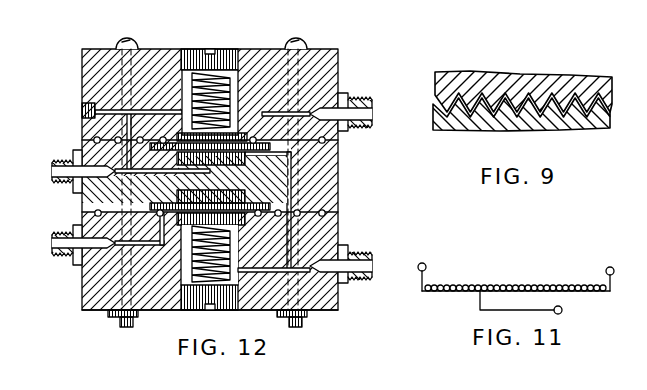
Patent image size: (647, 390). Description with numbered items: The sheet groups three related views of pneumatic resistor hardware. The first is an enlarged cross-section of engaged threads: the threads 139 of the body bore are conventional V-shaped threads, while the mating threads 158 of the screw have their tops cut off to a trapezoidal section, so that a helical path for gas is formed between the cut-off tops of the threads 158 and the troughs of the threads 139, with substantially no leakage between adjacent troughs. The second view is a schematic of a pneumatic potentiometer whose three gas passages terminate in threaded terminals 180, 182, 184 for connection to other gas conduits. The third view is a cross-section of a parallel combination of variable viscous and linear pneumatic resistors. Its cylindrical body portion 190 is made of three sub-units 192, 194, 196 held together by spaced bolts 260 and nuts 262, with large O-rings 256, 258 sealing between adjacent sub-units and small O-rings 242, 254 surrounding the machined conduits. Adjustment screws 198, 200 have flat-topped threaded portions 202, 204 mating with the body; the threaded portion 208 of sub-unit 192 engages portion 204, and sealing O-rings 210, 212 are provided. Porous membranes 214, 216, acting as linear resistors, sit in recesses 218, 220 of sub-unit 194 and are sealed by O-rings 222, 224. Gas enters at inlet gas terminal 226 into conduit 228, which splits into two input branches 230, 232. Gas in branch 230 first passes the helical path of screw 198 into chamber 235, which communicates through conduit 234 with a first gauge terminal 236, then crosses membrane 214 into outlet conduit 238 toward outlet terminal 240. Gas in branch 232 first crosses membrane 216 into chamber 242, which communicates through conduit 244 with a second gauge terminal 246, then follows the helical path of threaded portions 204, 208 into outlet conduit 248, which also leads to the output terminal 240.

In FIG. 9, the threads 139 is at (587, 90).
In FIG. 9, the threads 158 is at (598, 128).
In FIG. 11, the threaded terminal 180 is at (427, 266).
In FIG. 11, the threaded terminal 182 is at (563, 310).
In FIG. 11, the threaded terminal 184 is at (606, 270).
In FIG. 12, the cylindrical body portion 190 is at (339, 305).
In FIG. 12, the body sub-unit 192 is at (338, 291).
In FIG. 12, the body sub-unit 194 is at (338, 166).
In FIG. 12, the body sub-unit 196 is at (266, 58).
In FIG. 12, the adjustment screw 198 is at (190, 47).
In FIG. 12, the adjustment screw 200 is at (187, 305).
In FIG. 12, the flat-topped threaded portion 202 is at (226, 83).
In FIG. 12, the flat-topped threaded portion 204 is at (232, 277).
In FIG. 12, the threaded portion 208 is at (187, 243).
In FIG. 12, the sealing O-ring 210 is at (245, 50).
In FIG. 12, the sealing O-ring 212 is at (256, 300).
In FIG. 12, the porous membrane 214 is at (178, 142).
In FIG. 12, the porous membrane 216 is at (222, 195).
In FIG. 12, the recess 218 is at (130, 158).
In FIG. 12, the recess 220 is at (160, 215).
In FIG. 12, the O-ring 222 is at (262, 143).
In FIG. 12, the O-ring 224 is at (262, 217).
In FIG. 12, the inlet gas terminal 226 is at (115, 186).
In FIG. 12, the conduit 228 is at (82, 190).
In FIG. 12, the input conduit branch 230 is at (165, 103).
In FIG. 12, the input conduit branch 232 is at (187, 180).
In FIG. 12, the conduit 234 is at (289, 94).
In FIG. 12, the chamber 235 is at (232, 128).
In FIG. 12, the first gauge terminal 236 is at (360, 106).
In FIG. 12, the outlet conduit 238 is at (316, 158).
In FIG. 12, the outlet terminal 240 is at (360, 264).
In FIG. 12, the chamber 242 is at (240, 219).
In FIG. 12, the conduit 244 is at (125, 255).
In FIG. 12, the second gauge terminal 246 is at (53, 256).
In FIG. 12, the outlet conduit 248 is at (288, 256).
In FIG. 12, the small O-ring 254 is at (297, 209).
In FIG. 12, the large O-ring 256 is at (83, 128).
In FIG. 12, the large O-ring 258 is at (95, 214).
In FIG. 12, the bolt 260 is at (127, 40).
In FIG. 12, the nut 262 is at (108, 322).